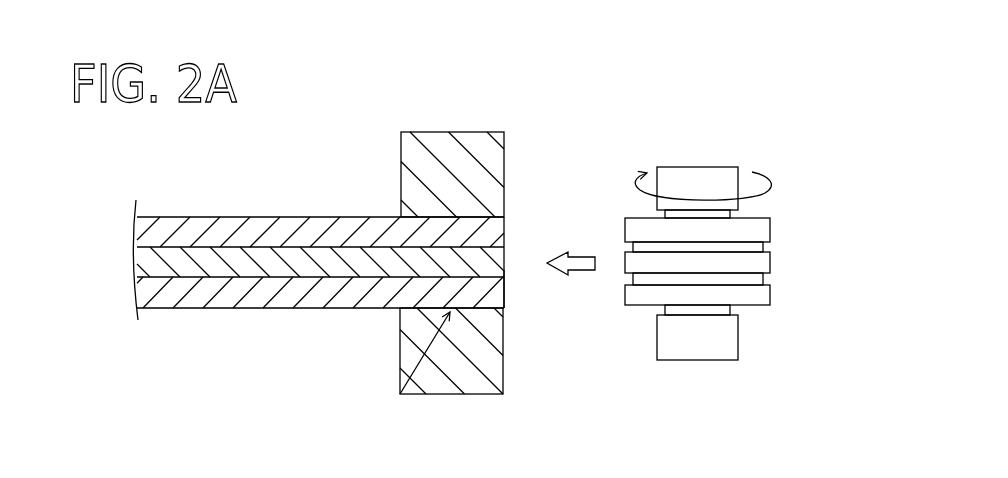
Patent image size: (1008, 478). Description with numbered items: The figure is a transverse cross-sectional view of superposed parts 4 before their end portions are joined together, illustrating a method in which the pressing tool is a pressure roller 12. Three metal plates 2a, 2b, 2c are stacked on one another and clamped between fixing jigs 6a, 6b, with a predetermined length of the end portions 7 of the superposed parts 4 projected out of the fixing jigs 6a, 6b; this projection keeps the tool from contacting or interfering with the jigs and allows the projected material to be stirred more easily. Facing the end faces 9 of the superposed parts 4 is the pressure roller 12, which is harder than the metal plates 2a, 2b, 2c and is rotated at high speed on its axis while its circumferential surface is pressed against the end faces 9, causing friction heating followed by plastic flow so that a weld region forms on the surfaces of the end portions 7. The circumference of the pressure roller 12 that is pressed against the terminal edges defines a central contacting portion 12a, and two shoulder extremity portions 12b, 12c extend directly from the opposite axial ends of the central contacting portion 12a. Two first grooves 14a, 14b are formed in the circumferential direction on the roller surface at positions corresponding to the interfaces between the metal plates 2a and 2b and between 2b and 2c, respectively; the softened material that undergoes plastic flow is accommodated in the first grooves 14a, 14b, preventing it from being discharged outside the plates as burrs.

The metal plate 2a is at (280, 237).
The metal plate 2b is at (275, 268).
The metal plate 2c is at (305, 293).
The superposed parts 4 is at (400, 395).
The fixing jig 6a is at (453, 160).
The fixing jig 6b is at (472, 378).
The end portions 7 is at (509, 206).
The end faces 9 is at (504, 276).
The pressure roller 12 is at (761, 271).
The central contacting portion 12a is at (783, 227).
The shoulder extremity portion 12b is at (698, 167).
The shoulder extremity portion 12c is at (691, 360).
The first groove 14a is at (768, 243).
The first groove 14b is at (768, 278).